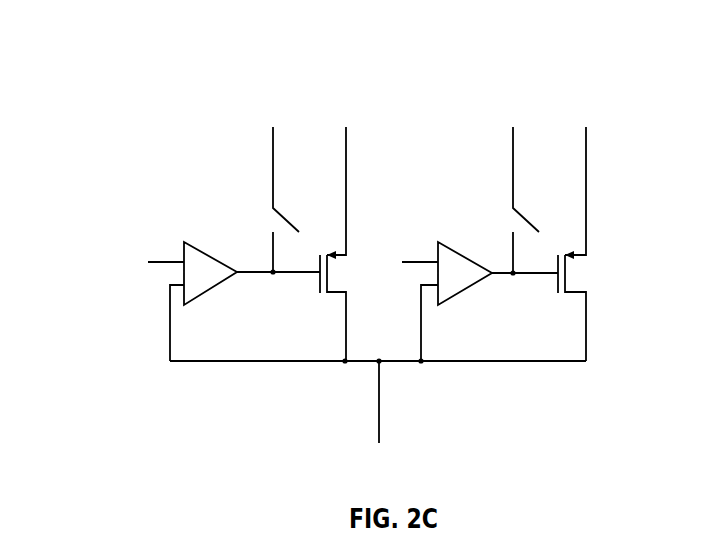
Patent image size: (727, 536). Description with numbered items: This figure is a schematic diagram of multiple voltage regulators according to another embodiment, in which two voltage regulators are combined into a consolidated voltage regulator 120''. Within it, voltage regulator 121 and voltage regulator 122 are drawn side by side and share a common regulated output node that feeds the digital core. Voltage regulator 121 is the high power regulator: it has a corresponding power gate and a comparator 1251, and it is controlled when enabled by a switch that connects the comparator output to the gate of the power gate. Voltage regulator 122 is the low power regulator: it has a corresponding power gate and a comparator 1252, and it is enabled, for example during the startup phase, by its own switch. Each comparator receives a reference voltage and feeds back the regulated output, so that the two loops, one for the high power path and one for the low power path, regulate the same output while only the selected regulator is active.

The consolidated voltage regulator 120'' is at (333, 262).
The voltage regulator 122 is at (183, 178).
The voltage regulator 121 is at (491, 178).
The comparator 1252 is at (213, 252).
The comparator 1251 is at (470, 256).